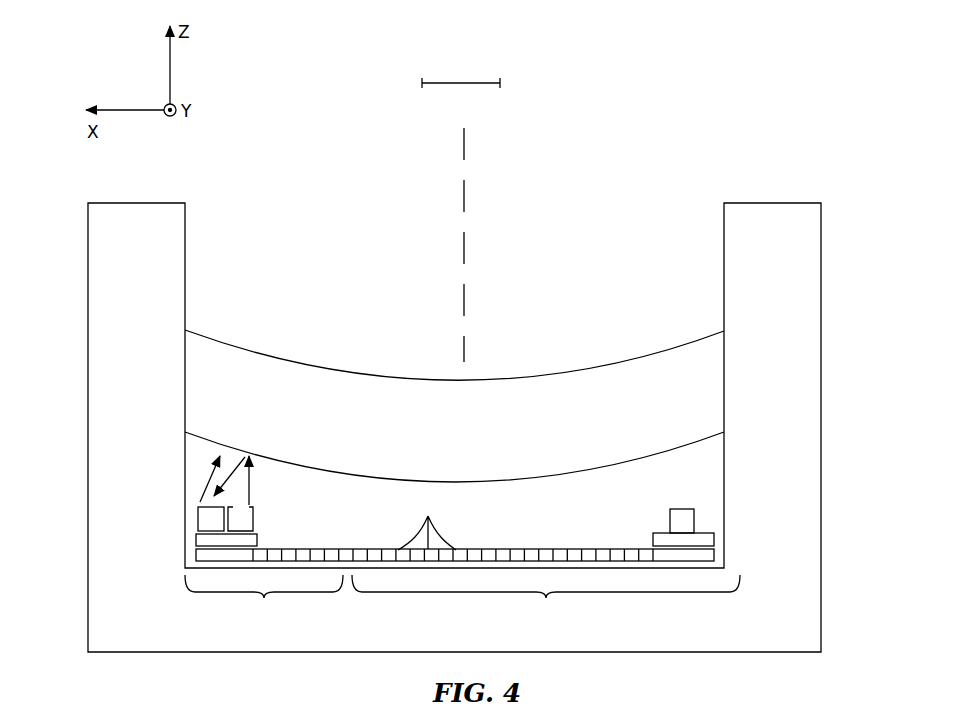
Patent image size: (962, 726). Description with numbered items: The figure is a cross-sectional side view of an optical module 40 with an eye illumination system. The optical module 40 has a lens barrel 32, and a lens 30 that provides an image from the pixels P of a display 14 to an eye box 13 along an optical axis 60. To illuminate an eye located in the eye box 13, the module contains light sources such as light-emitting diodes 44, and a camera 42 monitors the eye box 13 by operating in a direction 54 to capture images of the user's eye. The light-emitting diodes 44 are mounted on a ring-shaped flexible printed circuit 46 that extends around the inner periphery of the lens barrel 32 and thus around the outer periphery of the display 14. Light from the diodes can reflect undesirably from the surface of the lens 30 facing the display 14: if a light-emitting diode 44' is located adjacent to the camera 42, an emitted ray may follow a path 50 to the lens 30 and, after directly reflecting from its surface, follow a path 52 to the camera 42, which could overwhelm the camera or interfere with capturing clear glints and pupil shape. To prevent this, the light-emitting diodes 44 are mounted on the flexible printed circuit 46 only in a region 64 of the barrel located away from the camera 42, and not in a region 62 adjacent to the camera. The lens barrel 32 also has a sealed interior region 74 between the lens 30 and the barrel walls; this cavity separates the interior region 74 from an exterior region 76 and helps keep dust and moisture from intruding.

The eye box 13 is at (500, 83).
The display 14 is at (610, 548).
The lens 30 is at (652, 367).
The lens barrel 32 is at (800, 598).
The optical module 40 is at (487, 404).
The camera 42 is at (212, 520).
The light-emitting diode 44 is at (775, 508).
The light-emitting diode 44' is at (285, 519).
The flexible printed circuit 46 is at (210, 540).
The path 50 is at (254, 487).
The path 52 is at (233, 468).
The direction 54 is at (210, 482).
The optical axis 60 is at (464, 197).
The region 62 is at (264, 601).
The region 64 is at (546, 600).
The interior region 74 is at (697, 458).
The exterior region 76 is at (676, 204).
The pixels P is at (427, 522).